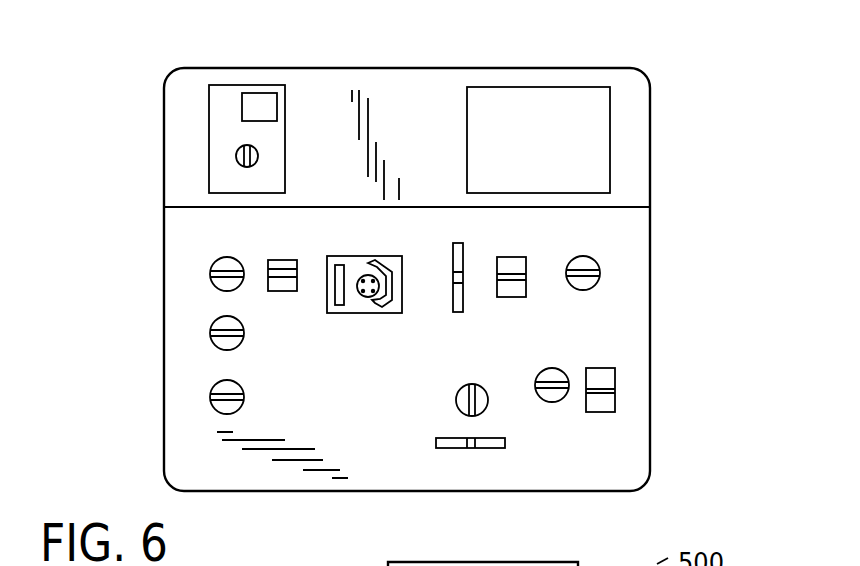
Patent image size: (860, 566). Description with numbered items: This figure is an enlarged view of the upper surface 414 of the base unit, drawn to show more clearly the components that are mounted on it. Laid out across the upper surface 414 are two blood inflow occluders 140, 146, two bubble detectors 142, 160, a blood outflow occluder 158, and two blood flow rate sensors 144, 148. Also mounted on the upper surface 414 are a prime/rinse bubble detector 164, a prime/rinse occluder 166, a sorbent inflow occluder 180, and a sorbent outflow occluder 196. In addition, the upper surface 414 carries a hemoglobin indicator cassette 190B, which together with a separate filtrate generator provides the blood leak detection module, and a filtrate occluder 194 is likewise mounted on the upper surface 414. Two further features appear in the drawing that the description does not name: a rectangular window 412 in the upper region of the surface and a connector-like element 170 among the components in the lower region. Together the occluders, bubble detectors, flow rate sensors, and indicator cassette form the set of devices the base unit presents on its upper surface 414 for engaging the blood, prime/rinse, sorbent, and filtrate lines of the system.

The upper surface 414 is at (624, 256).
The display window 412 is at (560, 97).
The hemoglobin indicator cassette 190B is at (268, 91).
The filtrate occluder 194 is at (236, 160).
The prime/rinse occluder 166 is at (210, 280).
The prime/rinse bubble detector 164 is at (268, 292).
The sorbent outflow occluder 196 is at (210, 341).
The sorbent inflow occluder 180 is at (210, 405).
The connector socket 170 is at (383, 313).
The blood flow rate sensor 144 is at (453, 255).
The bubble detector 142 is at (515, 257).
The blood inflow occluder 140 is at (600, 282).
The blood inflow occluder 146 is at (456, 405).
The blood flow rate sensor 148 is at (447, 449).
The blood outflow occluder 158 is at (558, 402).
The bubble detector 160 is at (615, 382).